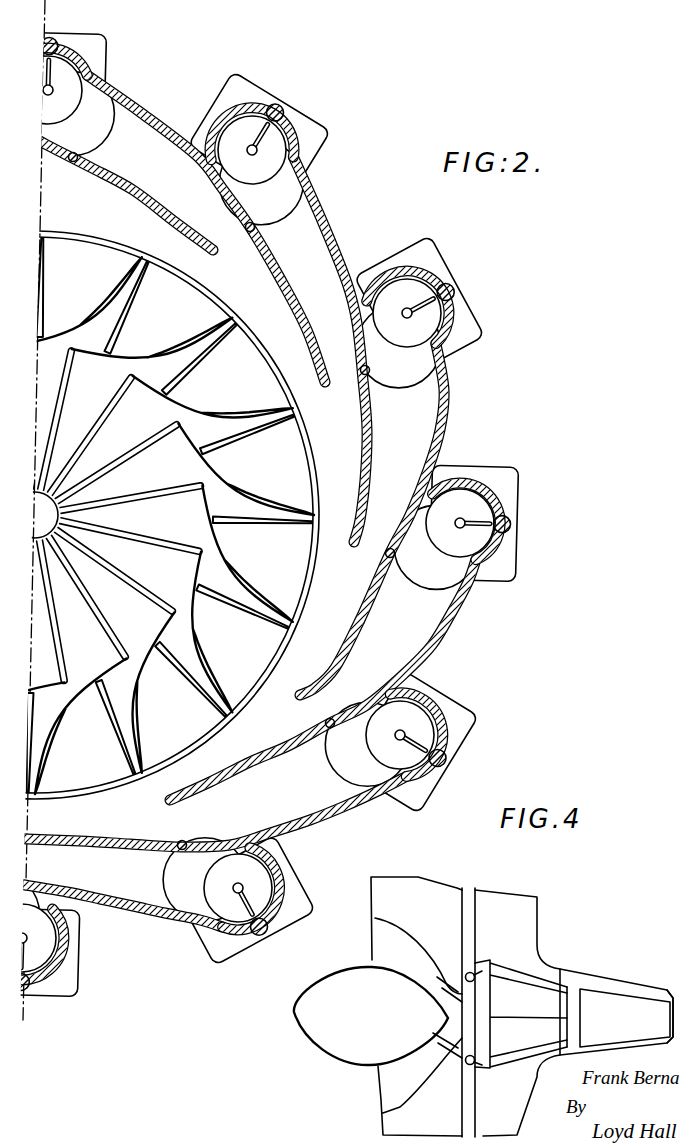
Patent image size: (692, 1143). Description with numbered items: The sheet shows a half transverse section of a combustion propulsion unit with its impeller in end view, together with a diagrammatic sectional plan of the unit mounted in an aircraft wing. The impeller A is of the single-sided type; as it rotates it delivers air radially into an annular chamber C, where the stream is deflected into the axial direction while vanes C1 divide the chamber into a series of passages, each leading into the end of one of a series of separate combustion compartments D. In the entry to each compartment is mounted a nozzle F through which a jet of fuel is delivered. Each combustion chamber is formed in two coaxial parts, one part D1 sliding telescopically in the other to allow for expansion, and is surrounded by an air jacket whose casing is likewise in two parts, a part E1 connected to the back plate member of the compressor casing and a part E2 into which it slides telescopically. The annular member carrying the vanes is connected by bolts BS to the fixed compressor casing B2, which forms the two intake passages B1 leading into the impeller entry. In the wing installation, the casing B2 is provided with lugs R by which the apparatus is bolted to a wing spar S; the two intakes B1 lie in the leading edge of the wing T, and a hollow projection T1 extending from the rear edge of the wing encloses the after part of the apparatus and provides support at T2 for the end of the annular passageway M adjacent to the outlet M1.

In FIG. 2, the impeller A is at (195, 594).
In FIG. 2, the annular chamber C is at (236, 277).
In FIG. 2, the vanes C1 is at (372, 432).
In FIG. 2, the combustion compartments D is at (505, 328).
In FIG. 2, the part of combustion chamber D1 is at (372, 722).
In FIG. 2, the part of air jacket casing E1 is at (520, 489).
In FIG. 2, the nozzle F is at (408, 300).
In FIG. 2, the bolts BS is at (393, 555).
In FIG. 4, the wing T is at (415, 902).
In FIG. 4, the hollow projection T1 is at (575, 972).
In FIG. 4, the support T2 is at (665, 992).
In FIG. 4, the intake passages B1 is at (407, 1077).
In FIG. 4, the compressor casing B2 is at (482, 1040).
In FIG. 4, the wing spar S is at (470, 912).
In FIG. 4, the lugs R is at (478, 1063).
In FIG. 4, the part of air jacket casing E2 is at (533, 990).
In FIG. 4, the annular passageway M is at (588, 1000).
In FIG. 4, the outlet M1 is at (676, 1006).